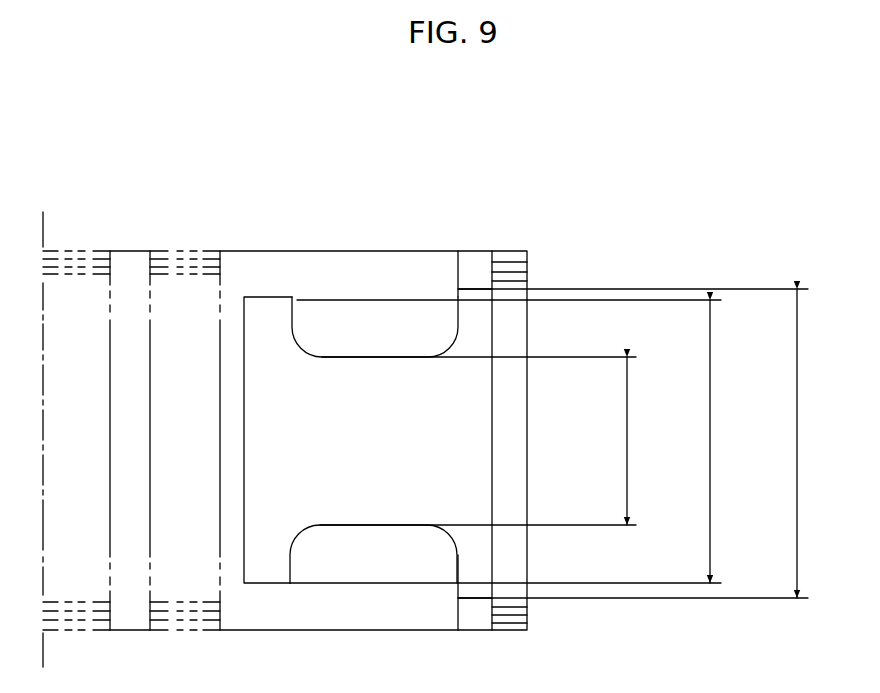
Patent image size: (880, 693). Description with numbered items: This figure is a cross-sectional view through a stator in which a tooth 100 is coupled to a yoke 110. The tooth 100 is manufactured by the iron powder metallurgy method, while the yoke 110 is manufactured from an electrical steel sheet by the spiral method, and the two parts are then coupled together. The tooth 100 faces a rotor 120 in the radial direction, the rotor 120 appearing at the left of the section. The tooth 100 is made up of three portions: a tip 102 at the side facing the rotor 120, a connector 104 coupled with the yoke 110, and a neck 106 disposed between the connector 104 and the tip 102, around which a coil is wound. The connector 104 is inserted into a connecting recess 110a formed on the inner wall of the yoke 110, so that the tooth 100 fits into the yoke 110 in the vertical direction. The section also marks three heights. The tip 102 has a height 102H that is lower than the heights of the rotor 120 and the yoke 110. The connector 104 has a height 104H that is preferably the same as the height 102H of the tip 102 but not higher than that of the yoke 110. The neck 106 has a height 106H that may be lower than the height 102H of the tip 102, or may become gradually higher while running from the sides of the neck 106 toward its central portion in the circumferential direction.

The tooth 100 is at (400, 178).
The tip 102 is at (268, 307).
The connector 104 is at (467, 332).
The neck 106 is at (385, 373).
The yoke 110 is at (518, 250).
The connecting recess 110a is at (481, 262).
The rotor 120 is at (132, 255).
The height of the neck 106H is at (505, 441).
The height of the tip 102H is at (532, 441).
The height of the connector 104H is at (659, 443).